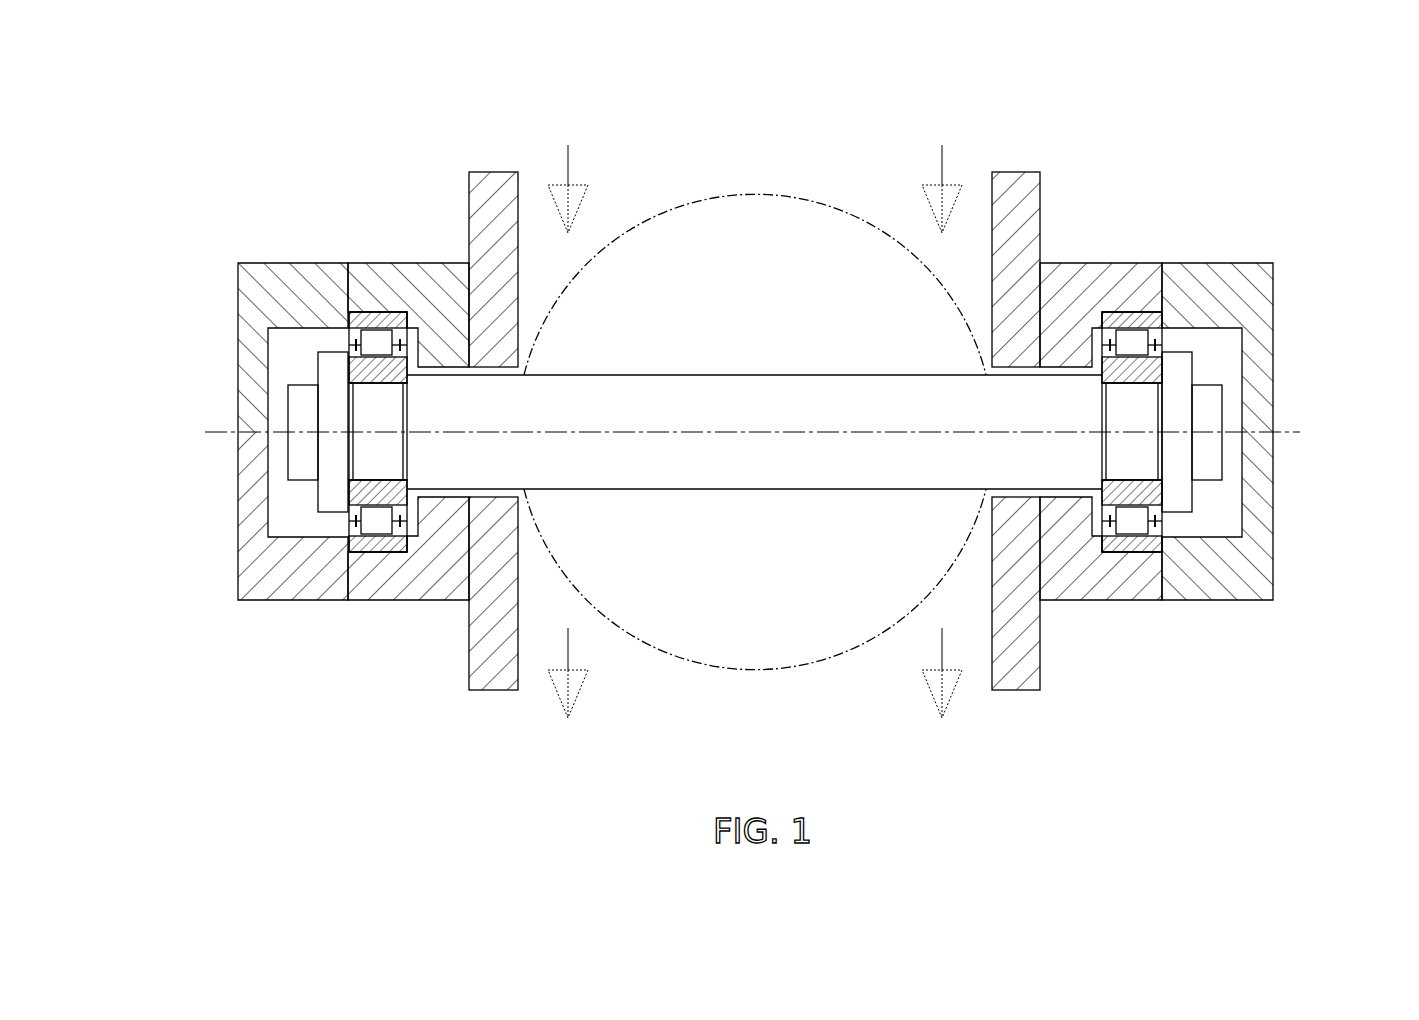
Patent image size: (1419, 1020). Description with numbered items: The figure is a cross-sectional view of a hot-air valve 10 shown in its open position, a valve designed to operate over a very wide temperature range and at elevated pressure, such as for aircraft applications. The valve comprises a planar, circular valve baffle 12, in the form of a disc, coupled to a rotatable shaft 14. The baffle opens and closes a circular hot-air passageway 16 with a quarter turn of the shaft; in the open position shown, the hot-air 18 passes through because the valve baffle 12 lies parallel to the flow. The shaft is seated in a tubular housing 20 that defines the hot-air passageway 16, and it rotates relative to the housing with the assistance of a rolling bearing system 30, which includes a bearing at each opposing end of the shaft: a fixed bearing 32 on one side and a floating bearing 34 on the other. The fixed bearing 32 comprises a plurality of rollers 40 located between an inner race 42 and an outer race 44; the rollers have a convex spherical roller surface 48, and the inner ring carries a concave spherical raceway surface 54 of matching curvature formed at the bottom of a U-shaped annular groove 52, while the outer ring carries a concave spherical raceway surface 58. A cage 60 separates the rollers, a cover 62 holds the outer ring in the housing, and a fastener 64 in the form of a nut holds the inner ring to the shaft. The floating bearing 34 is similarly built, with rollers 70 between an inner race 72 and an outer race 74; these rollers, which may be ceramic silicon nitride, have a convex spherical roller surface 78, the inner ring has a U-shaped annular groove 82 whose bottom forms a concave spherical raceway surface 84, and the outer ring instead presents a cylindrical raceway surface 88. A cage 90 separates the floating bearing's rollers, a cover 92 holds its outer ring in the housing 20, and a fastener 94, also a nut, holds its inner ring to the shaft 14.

The hot-air valve 10 is at (218, 108).
The valve baffle 12 is at (777, 220).
The rotatable shaft 14 is at (635, 392).
The hot-air passageway 16 is at (768, 178).
The hot-air 18 is at (585, 187).
The housing 20 is at (473, 205).
The rolling bearing system 30 is at (336, 195).
The fixed bearing 32 is at (1133, 418).
The floating bearing 34 is at (377, 408).
The rollers 40 is at (1138, 340).
The inner race 42 is at (1158, 368).
The outer race 44 is at (1150, 325).
The convex spherical roller surface 48 is at (1231, 285).
The annular groove 52 is at (1109, 573).
The concave spherical raceway surface 54 is at (1137, 500).
The concave spherical raceway surface 58 is at (1138, 525).
The cage 60 is at (1175, 575).
The cover 62 is at (1215, 603).
The fastener (nut) 64 is at (1177, 472).
The rollers 70 is at (347, 335).
The inner race 72 is at (350, 373).
The outer race 74 is at (355, 305).
The convex spherical roller surface 78 is at (267, 288).
The annular groove 82 is at (394, 571).
The concave spherical raceway surface 84 is at (368, 482).
The cylindrical raceway surface 88 is at (372, 523).
The cage 90 is at (300, 603).
The cover 92 is at (245, 570).
The fastener (nut) 94 is at (335, 405).